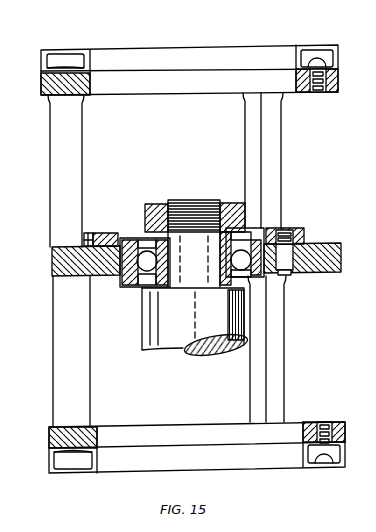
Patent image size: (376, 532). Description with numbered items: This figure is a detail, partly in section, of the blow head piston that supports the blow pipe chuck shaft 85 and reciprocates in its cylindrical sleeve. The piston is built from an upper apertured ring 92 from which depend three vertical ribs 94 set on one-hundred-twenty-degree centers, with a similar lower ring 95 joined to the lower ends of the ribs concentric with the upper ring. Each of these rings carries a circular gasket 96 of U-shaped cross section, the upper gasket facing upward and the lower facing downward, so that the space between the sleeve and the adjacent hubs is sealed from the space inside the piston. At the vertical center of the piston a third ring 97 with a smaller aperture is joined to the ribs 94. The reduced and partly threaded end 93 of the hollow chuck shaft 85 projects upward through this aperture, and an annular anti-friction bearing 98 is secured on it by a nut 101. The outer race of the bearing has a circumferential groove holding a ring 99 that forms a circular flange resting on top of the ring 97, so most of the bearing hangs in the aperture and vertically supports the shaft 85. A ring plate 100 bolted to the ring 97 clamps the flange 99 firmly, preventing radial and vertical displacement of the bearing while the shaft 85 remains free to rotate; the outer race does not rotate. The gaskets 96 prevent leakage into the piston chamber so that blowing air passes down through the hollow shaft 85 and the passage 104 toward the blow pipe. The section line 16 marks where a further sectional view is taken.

The section line 16- 16 is at (47, 262).
The blow pipe chuck shaft 85 is at (158, 352).
The apertured ring 92 is at (133, 95).
The reduced and partly threaded end 93 is at (240, 289).
The vertical ribs 94 is at (83, 158).
The ring 95 is at (163, 428).
The circular gasket 96 is at (309, 49).
The third ring 97 is at (95, 277).
The annular anti-friction bearing 98 is at (133, 290).
The ring 99 is at (117, 241).
The ring plate 100 is at (89, 232).
The nut 101 is at (240, 203).
The passage 104 is at (201, 348).